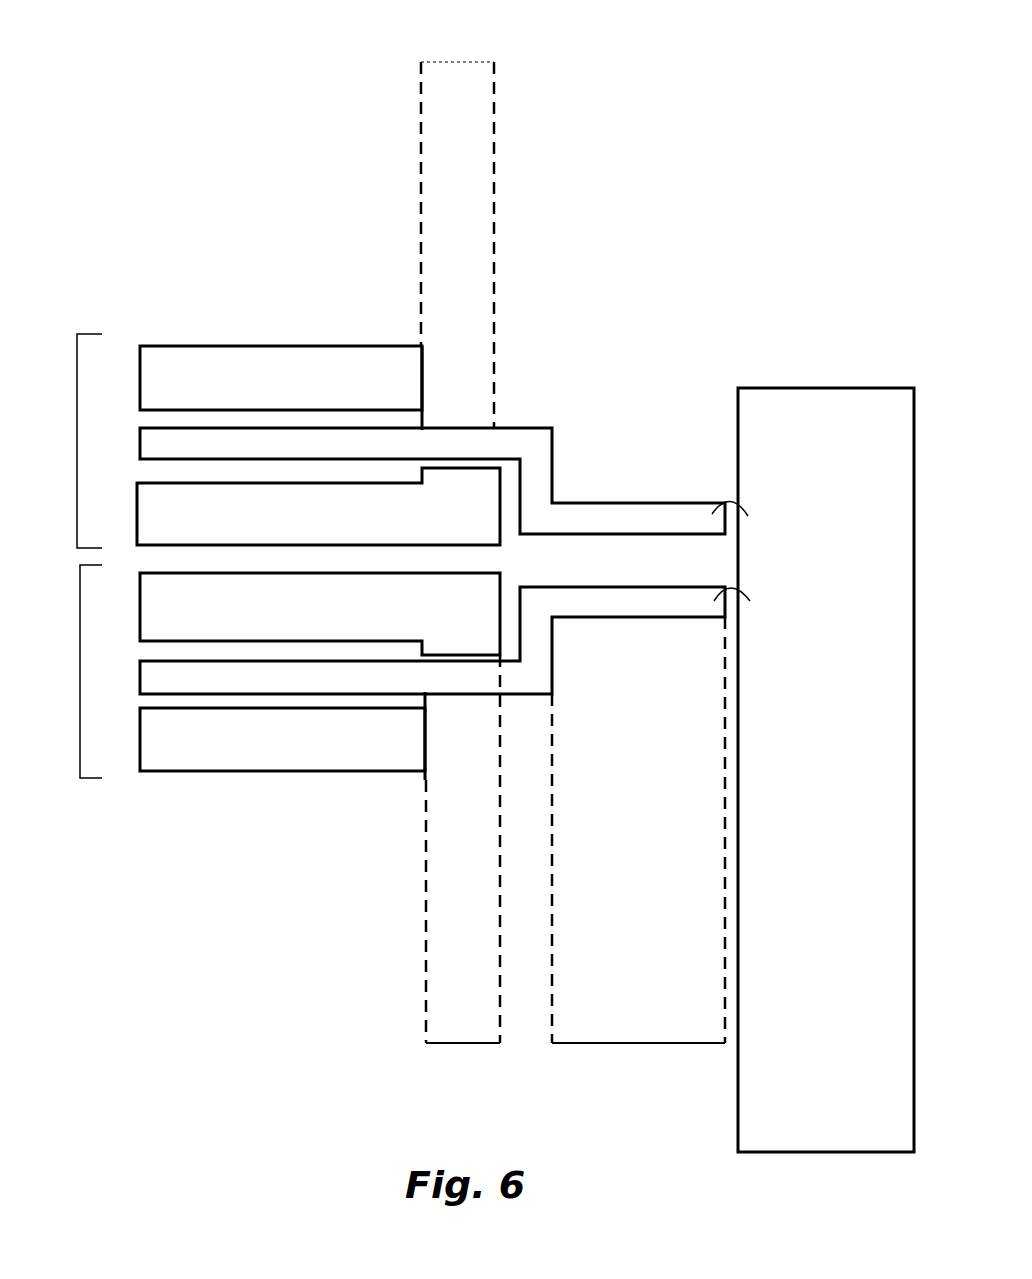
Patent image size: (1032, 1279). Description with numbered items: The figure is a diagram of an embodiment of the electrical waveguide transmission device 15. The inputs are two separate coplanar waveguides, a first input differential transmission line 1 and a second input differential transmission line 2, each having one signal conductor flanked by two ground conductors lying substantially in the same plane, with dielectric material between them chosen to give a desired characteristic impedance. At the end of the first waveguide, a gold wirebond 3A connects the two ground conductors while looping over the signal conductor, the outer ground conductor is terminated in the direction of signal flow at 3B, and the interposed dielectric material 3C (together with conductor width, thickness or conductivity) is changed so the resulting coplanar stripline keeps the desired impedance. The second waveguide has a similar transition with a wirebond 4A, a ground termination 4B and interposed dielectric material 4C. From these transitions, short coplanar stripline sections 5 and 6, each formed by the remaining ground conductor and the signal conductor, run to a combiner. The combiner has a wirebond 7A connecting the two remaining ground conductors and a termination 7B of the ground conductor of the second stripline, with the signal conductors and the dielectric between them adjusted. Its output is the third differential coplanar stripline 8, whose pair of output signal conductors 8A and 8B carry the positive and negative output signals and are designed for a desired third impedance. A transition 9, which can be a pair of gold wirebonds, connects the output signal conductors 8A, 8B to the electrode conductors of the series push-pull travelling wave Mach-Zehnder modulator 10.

The first input differential transmission line 1 is at (77, 435).
The second input differential transmission line 2 is at (80, 665).
The gold wirebond 3A is at (403, 503).
The termination of the outer ground conductor 3B is at (425, 364).
The interposed dielectric material 3C is at (413, 475).
The wirebond 4A is at (405, 625).
The termination of the outer ground conductor 4B is at (427, 755).
The interposed dielectric material 4C is at (414, 640).
The first differential coplanar stripline section 5 is at (455, 62).
The second differential coplanar stripline section 6 is at (465, 1043).
The wirebond 7A is at (487, 528).
The termination 7B is at (500, 634).
The third differential coplanar stripline 8 is at (640, 1043).
The output signal conductor 8A is at (612, 517).
The output signal conductor 8B is at (628, 600).
The transition 9 is at (713, 517).
The series push-pull travelling wave Mach-Zehnder modulator 10 is at (838, 741).
The electrical waveguide transmission device 15 is at (362, 258).